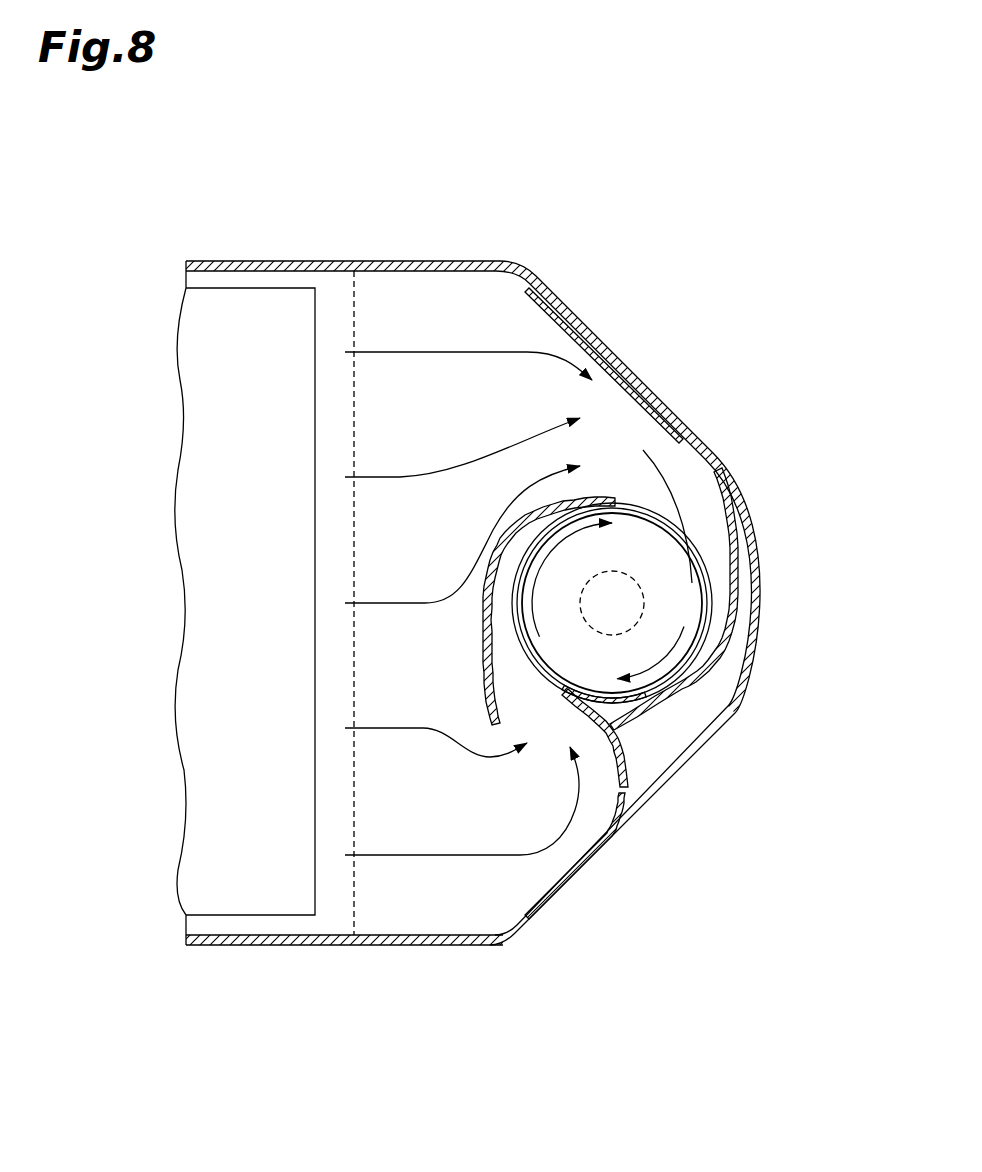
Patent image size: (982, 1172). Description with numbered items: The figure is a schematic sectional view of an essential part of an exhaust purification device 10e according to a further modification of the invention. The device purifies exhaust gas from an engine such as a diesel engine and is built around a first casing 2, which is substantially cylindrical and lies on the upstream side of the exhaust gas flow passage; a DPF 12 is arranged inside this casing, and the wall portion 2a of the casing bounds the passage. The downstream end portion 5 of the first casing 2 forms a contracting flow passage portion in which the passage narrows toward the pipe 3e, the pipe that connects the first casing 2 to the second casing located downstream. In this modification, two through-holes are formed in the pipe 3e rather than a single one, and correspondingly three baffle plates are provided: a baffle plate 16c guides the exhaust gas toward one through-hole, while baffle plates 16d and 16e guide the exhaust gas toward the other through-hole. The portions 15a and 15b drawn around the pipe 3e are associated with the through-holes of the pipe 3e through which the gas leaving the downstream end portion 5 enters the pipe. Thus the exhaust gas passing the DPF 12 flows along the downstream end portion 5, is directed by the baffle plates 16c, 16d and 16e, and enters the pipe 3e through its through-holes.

The exhaust purification device 10e is at (637, 192).
The first casing 2 is at (344, 261).
The inclined wall of casing 2a is at (438, 261).
The DPF 12 is at (248, 289).
The baffle plate 16c is at (545, 312).
The baffle plate 16e is at (574, 868).
The downstream end portion 5 is at (487, 419).
The pipe 3e is at (706, 547).
The upper guide wall 15a is at (655, 506).
The baffle plate 16d is at (481, 665).
The lower guide wall 15b is at (542, 677).